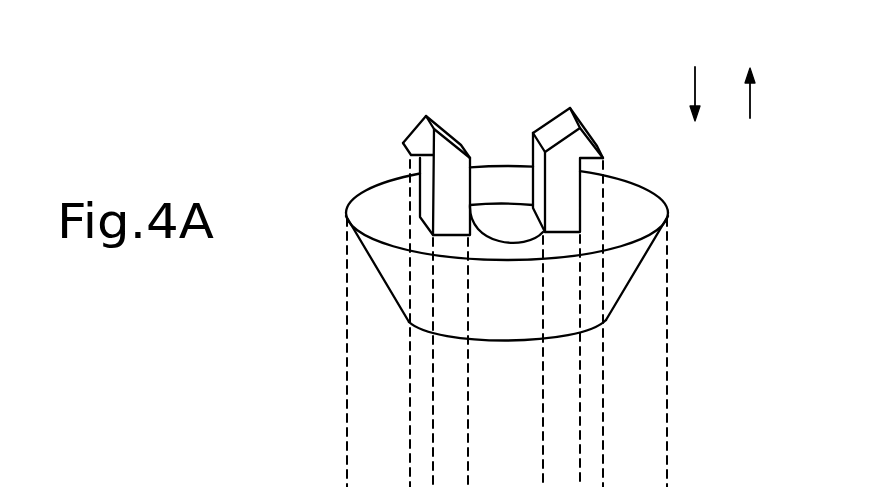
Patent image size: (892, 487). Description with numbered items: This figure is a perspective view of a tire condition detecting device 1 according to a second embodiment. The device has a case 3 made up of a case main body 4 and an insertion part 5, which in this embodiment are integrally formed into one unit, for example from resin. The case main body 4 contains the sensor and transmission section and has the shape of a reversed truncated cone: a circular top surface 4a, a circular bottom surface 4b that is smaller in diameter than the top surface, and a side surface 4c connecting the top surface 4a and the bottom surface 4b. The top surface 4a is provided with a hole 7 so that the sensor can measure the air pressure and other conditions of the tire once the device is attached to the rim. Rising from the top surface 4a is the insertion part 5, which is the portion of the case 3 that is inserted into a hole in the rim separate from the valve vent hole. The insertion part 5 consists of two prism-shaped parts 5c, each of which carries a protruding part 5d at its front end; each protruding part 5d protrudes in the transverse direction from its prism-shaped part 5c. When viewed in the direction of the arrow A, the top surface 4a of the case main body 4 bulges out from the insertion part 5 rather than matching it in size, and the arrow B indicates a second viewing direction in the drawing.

The tire condition detecting device 1 is at (429, 104).
The case 3 is at (668, 212).
The case main body 4 is at (376, 268).
The top surface 4a is at (372, 207).
The bottom surface 4b is at (512, 343).
The side surface 4c is at (618, 272).
The insertion part 5 is at (413, 128).
The prism-shaped part 5c is at (565, 195).
The protruding part 5d is at (583, 147).
The hole 7 is at (494, 207).
The arrow A is at (695, 80).
The arrow B is at (752, 102).